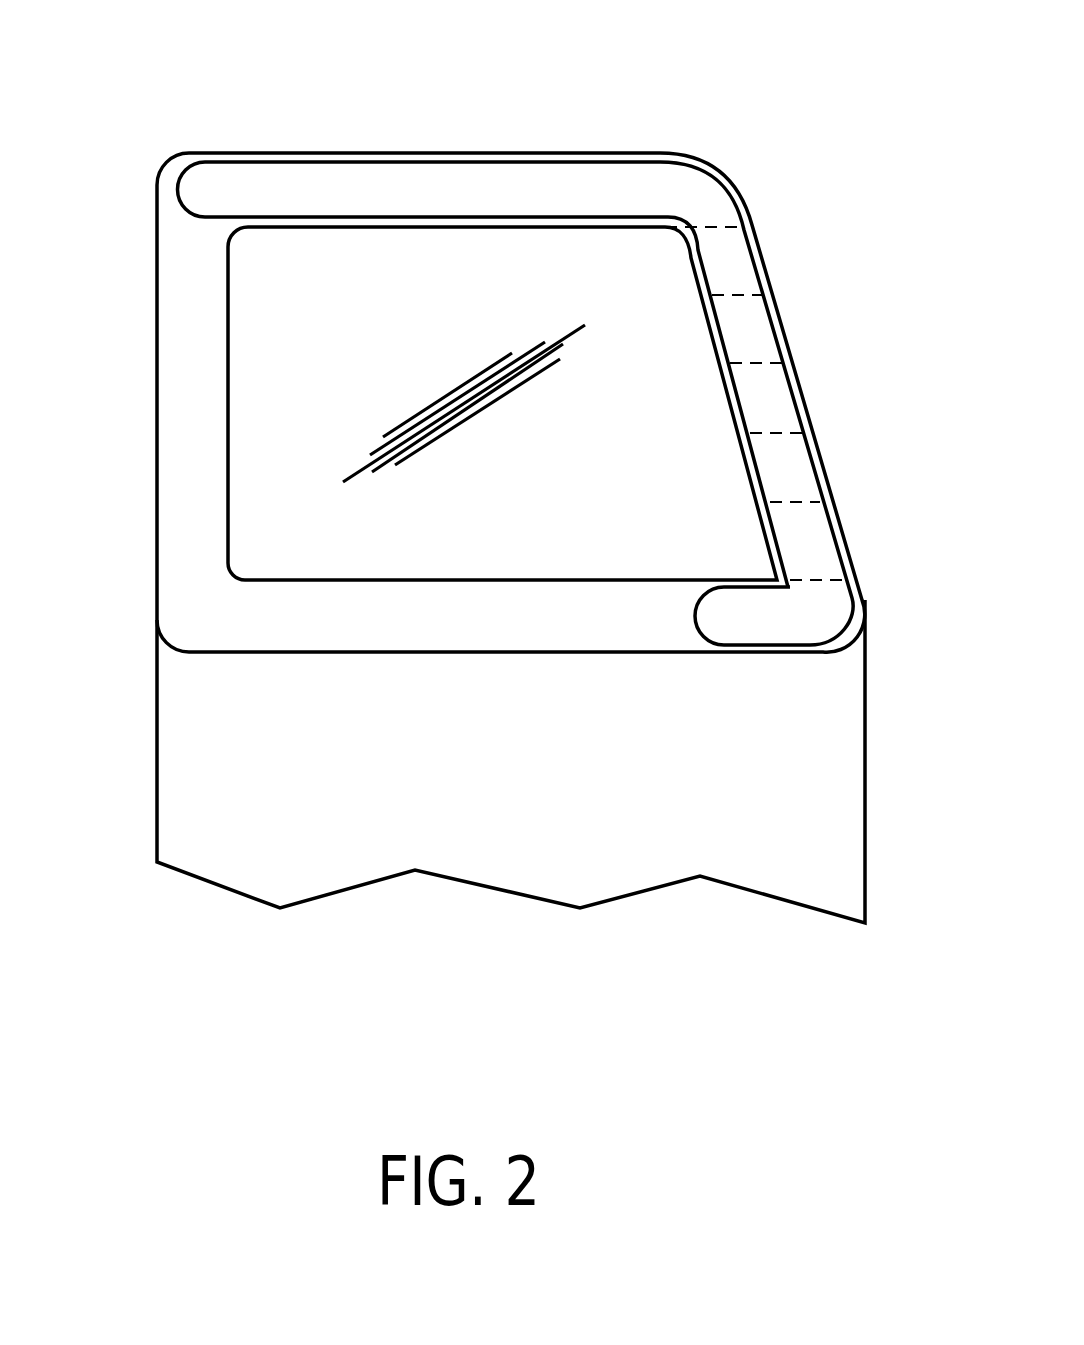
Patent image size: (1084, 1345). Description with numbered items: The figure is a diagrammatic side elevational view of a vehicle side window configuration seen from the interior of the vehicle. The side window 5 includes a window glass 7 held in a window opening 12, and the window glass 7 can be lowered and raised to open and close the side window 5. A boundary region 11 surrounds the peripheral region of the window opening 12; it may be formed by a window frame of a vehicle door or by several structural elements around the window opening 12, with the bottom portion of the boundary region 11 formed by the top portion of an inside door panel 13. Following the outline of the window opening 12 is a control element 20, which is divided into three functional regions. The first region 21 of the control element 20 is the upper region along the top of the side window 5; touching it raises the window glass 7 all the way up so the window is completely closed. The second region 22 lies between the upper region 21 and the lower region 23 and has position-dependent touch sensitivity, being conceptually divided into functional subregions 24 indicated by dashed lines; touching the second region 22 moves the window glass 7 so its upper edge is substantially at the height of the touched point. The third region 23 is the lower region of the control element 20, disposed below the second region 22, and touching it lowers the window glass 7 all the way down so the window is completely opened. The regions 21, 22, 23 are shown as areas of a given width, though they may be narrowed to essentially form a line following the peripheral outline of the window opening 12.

The side window 5 is at (500, 511).
The window glass 7 is at (543, 538).
The boundary region 11 is at (193, 336).
The window opening 12 is at (267, 450).
The inside door panel 13 is at (333, 842).
The control element 20 is at (682, 190).
The first region 21 is at (373, 183).
The second region 22 is at (778, 403).
The third region 23 is at (828, 607).
The functional subregions 24 is at (752, 327).